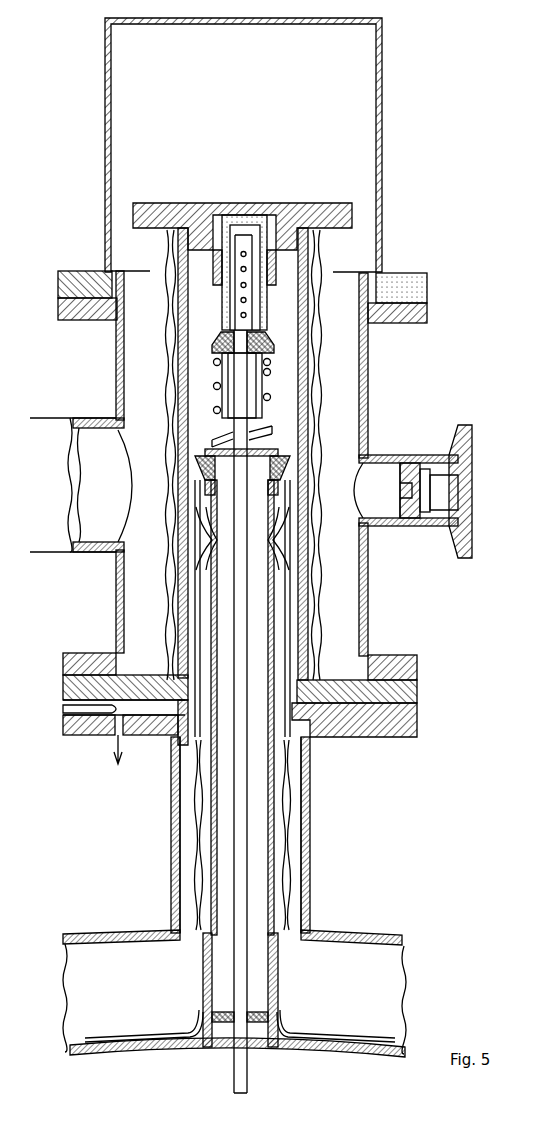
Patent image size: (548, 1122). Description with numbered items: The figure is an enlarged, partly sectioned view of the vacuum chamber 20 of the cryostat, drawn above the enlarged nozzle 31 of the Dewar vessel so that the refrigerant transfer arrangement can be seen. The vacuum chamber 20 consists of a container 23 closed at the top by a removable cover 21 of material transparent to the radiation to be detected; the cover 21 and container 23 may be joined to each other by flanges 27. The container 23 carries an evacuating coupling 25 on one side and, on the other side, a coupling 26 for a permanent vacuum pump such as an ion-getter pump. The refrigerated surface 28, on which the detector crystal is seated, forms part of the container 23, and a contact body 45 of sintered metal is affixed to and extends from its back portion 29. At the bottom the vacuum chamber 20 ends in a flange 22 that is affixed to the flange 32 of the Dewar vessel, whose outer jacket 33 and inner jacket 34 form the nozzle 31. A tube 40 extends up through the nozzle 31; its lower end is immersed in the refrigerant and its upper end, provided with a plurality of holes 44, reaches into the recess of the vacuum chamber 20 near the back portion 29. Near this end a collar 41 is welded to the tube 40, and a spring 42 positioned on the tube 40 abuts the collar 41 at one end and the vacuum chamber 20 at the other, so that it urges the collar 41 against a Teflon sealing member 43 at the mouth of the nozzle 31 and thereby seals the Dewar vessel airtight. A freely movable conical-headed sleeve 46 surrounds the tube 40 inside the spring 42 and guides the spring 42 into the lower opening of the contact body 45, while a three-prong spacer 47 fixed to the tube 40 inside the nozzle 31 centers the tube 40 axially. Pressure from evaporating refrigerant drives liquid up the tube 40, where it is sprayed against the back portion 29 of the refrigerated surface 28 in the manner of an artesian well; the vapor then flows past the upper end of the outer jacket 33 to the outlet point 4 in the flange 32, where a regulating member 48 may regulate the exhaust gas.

The vacuum chamber 20 is at (362, 120).
The removable cover 21 is at (367, 45).
The flange 22 is at (415, 690).
The container 23 is at (363, 597).
The evacuating coupling 25 is at (466, 455).
The coupling 26 is at (80, 553).
The flanges 27 is at (425, 302).
The refrigerated surface 28 is at (345, 219).
The back portion 29 is at (276, 270).
The nozzle 31 is at (344, 809).
The flange 32 is at (415, 719).
The outer wall, vessel or jacket 33 is at (300, 581).
The inner wall, vessel or jacket 34 is at (275, 612).
The tube 40 is at (250, 1073).
The collar 41 is at (285, 446).
The spring 42 is at (270, 397).
The Teflon sealing member 43 is at (195, 462).
The holes 44 is at (240, 315).
The contact body 45 is at (262, 306).
The conical-headed sleeve 46 is at (272, 343).
The three-prong spacer 47 is at (217, 1024).
The regulating member 48 is at (64, 708).
The outlet point 4 is at (113, 734).